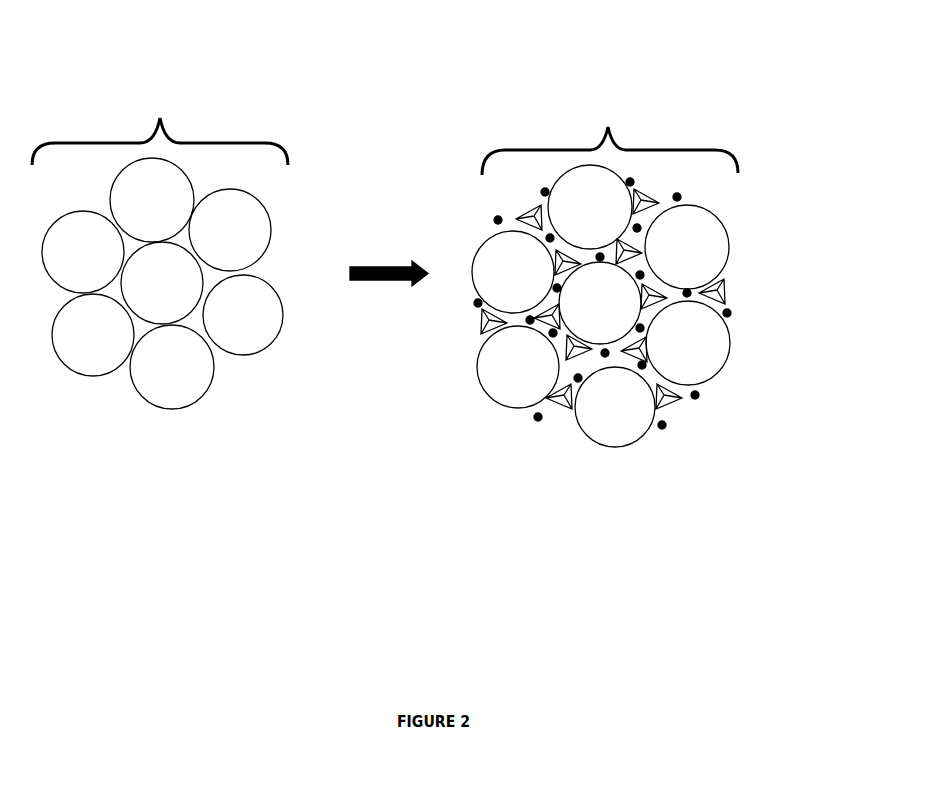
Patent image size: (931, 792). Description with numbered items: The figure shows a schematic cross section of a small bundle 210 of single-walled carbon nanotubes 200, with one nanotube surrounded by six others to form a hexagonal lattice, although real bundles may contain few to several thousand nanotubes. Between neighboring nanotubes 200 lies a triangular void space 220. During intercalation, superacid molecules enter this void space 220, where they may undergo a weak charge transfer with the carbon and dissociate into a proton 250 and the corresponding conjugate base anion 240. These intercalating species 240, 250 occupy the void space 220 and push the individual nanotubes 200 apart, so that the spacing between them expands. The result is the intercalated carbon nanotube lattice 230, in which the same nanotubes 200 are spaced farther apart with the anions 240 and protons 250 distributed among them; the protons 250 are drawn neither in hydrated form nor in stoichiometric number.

The bundle of single-walled carbon nanotubes 210 is at (185, 102).
The intercalated CNT lattice 230 is at (635, 110).
The single-walled carbon nanotube 200 is at (268, 248).
The triangular void space 220 is at (190, 318).
The conjugate base anion 240 is at (730, 298).
The proton 250 is at (705, 395).